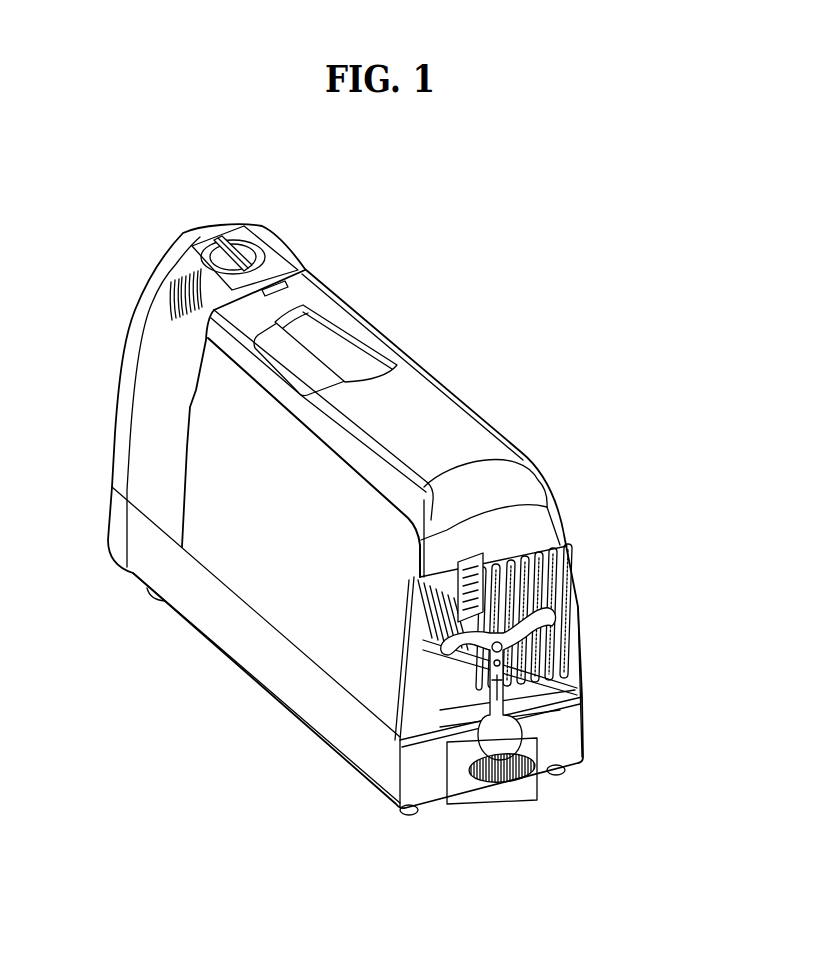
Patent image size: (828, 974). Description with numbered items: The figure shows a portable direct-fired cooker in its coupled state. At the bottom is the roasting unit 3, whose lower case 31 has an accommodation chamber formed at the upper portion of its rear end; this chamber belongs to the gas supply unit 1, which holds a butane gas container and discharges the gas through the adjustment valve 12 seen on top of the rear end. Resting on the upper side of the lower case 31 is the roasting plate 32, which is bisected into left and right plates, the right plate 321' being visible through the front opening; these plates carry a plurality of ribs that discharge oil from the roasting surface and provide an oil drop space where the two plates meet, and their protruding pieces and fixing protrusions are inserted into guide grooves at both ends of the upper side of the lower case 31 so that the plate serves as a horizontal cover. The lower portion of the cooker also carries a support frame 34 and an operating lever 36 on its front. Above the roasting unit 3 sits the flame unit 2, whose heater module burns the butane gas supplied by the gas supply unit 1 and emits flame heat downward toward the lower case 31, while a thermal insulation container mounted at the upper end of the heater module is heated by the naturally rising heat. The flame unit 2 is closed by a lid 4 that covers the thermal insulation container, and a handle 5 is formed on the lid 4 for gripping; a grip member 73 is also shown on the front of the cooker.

The gas supply unit 1 is at (124, 307).
The flame unit 2 is at (403, 329).
The roasting unit 3 is at (254, 686).
The lid 4 is at (432, 406).
The handle 5 is at (340, 330).
The adjustment valve 12 is at (228, 233).
The lower case 31 is at (335, 723).
The roasting plate 32 is at (233, 598).
The support frame 34 is at (578, 681).
The operating lever 36 is at (520, 781).
The grip handle 73 is at (553, 612).
The right plate 321' is at (571, 617).